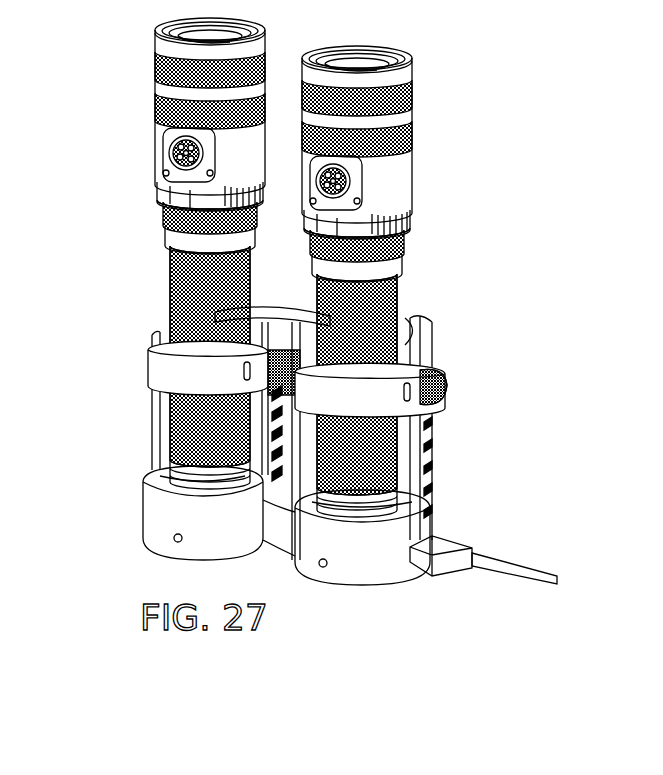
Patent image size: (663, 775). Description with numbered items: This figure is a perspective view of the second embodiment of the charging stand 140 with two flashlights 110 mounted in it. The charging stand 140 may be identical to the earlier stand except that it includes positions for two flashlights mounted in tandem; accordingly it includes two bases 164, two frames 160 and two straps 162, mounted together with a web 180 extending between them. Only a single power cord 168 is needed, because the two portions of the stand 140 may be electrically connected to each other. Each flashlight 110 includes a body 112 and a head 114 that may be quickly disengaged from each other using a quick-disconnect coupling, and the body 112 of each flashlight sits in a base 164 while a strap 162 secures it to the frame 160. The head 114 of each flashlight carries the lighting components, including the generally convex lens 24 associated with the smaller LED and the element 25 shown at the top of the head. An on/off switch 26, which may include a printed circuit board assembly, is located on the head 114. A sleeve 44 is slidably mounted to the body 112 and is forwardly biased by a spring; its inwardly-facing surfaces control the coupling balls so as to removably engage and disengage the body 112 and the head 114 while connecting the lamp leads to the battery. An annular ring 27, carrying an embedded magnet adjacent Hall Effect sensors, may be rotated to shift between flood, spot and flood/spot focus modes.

The convex lens 24 is at (233, 46).
The reflector 25 is at (190, 42).
The on/off switch 26 is at (178, 157).
The annular ring 27 is at (176, 192).
The sleeve 44 is at (166, 232).
The flashlight 110 is at (120, 157).
The body 112 is at (169, 280).
The head 114 is at (157, 94).
The charging stand 140 is at (130, 481).
The frame 160 is at (430, 437).
The strap 162 is at (160, 354).
The base 164 is at (152, 522).
The power cord 168 is at (470, 563).
The web 180 is at (288, 335).